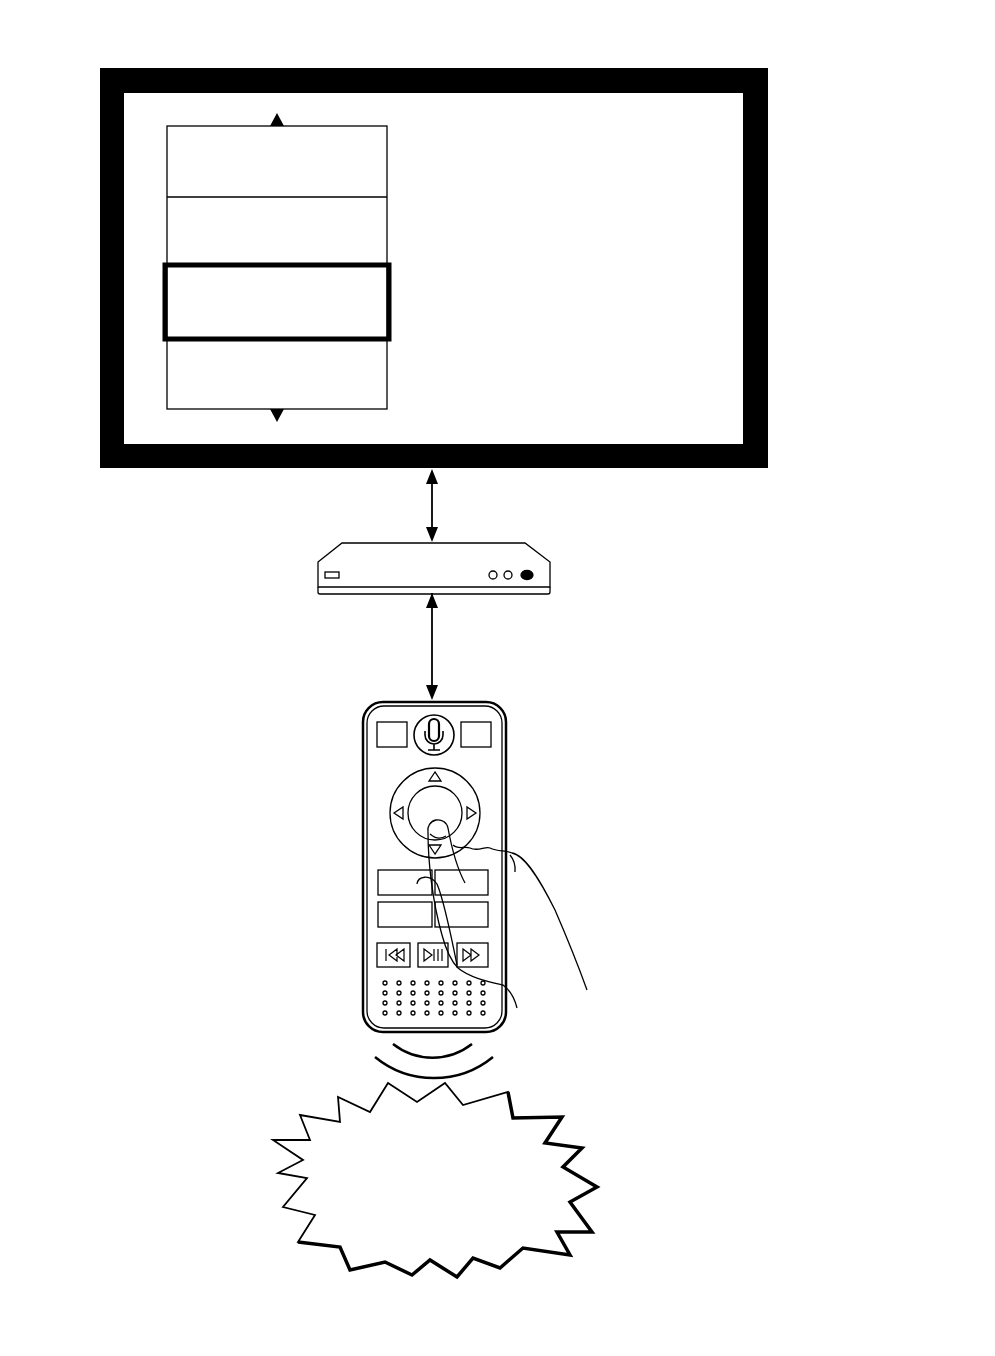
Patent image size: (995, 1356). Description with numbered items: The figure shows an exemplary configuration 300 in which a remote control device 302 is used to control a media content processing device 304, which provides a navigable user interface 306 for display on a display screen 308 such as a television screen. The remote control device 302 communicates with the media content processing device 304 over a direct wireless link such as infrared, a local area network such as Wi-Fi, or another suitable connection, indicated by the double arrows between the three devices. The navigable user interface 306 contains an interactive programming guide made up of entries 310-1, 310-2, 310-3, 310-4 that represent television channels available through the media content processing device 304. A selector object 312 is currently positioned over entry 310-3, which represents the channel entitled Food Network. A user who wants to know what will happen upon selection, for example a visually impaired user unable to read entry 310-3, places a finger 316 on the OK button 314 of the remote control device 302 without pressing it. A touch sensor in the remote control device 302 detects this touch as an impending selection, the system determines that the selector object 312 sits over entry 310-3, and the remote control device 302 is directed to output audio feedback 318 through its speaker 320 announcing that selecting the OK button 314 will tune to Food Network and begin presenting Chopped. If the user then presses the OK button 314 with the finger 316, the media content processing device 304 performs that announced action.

The configuration 300 is at (90, 58).
The remote control device 302 is at (465, 850).
The media content processing device 304 is at (555, 574).
The navigable user interface 306 is at (360, 265).
The display screen 308 is at (768, 100).
The entry 310-1 is at (373, 168).
The entry 310-2 is at (373, 237).
The entry 310-3 is at (375, 306).
The entry 310-4 is at (373, 375).
The selector object 312 is at (390, 318).
The OK button 314 is at (455, 804).
The finger 316 is at (435, 827).
The audio feedback 318 is at (562, 1117).
The speaker 320 is at (383, 975).